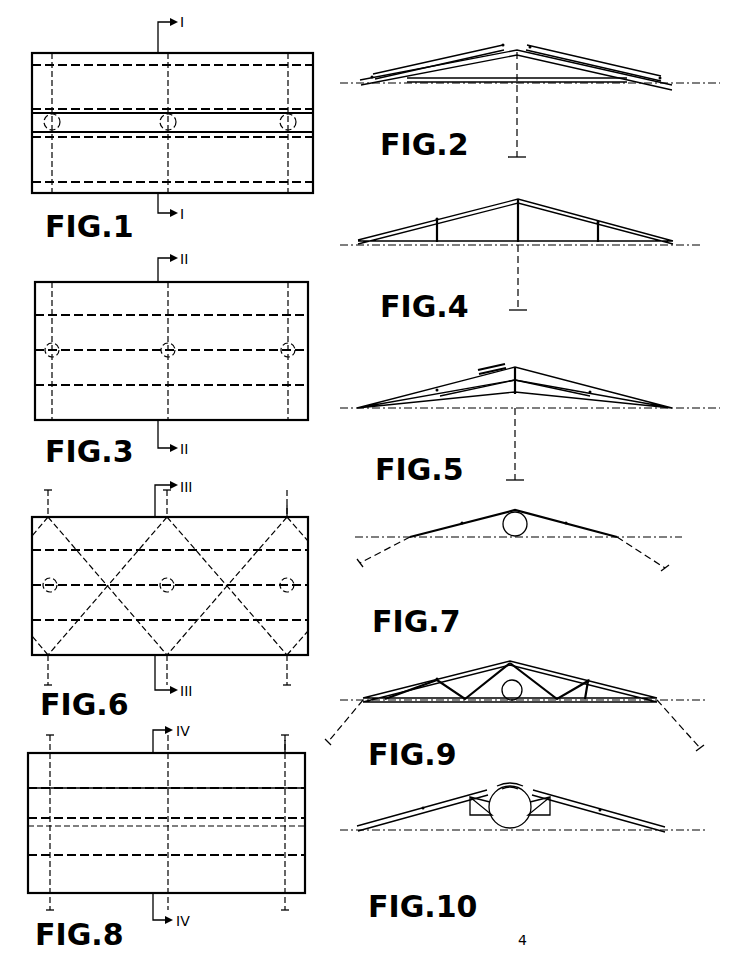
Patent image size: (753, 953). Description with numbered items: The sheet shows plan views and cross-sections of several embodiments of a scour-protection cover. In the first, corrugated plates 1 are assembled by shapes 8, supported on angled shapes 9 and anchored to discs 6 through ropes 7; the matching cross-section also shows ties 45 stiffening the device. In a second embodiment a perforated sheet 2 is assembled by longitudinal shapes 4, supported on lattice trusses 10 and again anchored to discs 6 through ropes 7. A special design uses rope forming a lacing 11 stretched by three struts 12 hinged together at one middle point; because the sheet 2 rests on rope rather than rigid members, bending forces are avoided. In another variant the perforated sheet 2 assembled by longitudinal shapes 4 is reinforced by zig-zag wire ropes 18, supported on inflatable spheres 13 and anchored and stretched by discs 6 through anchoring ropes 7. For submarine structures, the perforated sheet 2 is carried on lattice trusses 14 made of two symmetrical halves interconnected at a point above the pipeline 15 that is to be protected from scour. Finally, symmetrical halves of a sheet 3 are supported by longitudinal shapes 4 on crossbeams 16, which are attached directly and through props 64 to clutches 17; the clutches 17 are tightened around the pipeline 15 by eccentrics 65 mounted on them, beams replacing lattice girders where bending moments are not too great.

In FIG. 1, the corrugated plates 1 is at (240, 64).
In FIG. 2, the corrugated plates 1 is at (602, 63).
In FIG. 3, the perforated sheet 2 is at (209, 290).
In FIG. 6, the perforated sheet 2 is at (214, 526).
In FIG. 8, the perforated sheet 2 is at (210, 766).
In FIG. 4, the perforated sheet 2 is at (561, 218).
In FIG. 5, the perforated sheet 2 is at (547, 389).
In FIG. 7, the perforated sheet 2 is at (551, 522).
In FIG. 9, the perforated sheet 2 is at (557, 674).
In FIG. 10, the sheet 3 is at (573, 807).
In FIG. 3, the longitudinal shapes 4 is at (246, 351).
In FIG. 6, the longitudinal shapes 4 is at (233, 549).
In FIG. 8, the longitudinal shapes 4 is at (233, 788).
In FIG. 4, the longitudinal shapes 4 is at (521, 199).
In FIG. 5, the longitudinal shapes 4 is at (517, 370).
In FIG. 7, the longitudinal shapes 4 is at (515, 510).
In FIG. 9, the longitudinal shapes 4 is at (517, 659).
In FIG. 10, the longitudinal shapes 4 is at (531, 790).
In FIG. 1, the discs 6 is at (174, 123).
In FIG. 3, the discs 6 is at (171, 348).
In FIG. 6, the discs 6 is at (288, 496).
In FIG. 8, the discs 6 is at (285, 745).
In FIG. 2, the discs 6 is at (518, 156).
In FIG. 4, the discs 6 is at (518, 311).
In FIG. 5, the discs 6 is at (514, 481).
In FIG. 7, the discs 6 is at (663, 566).
In FIG. 9, the discs 6 is at (686, 748).
In FIG. 6, the ropes 7 is at (287, 512).
In FIG. 8, the ropes 7 is at (288, 754).
In FIG. 2, the ropes 7 is at (517, 129).
In FIG. 4, the ropes 7 is at (517, 279).
In FIG. 5, the ropes 7 is at (515, 449).
In FIG. 7, the ropes 7 is at (641, 562).
In FIG. 9, the ropes 7 is at (670, 724).
In FIG. 1, the shapes 8 is at (254, 112).
In FIG. 2, the shapes 8 is at (546, 50).
In FIG. 1, the angled shapes 9 is at (169, 62).
In FIG. 2, the angled shapes 9 is at (660, 90).
In FIG. 3, the lattice trusses 10 is at (288, 305).
In FIG. 4, the lattice trusses 10 is at (522, 238).
In FIG. 5, the lacing 11 is at (568, 402).
In FIG. 5, the struts 12 is at (486, 372).
In FIG. 6, the inflatable spheres 13 is at (224, 586).
In FIG. 7, the inflatable spheres 13 is at (520, 530).
In FIG. 8, the lattice trusses 14 is at (166, 788).
In FIG. 9, the lattice trusses 14 is at (564, 706).
In FIG. 8, the pipeline 15 is at (170, 818).
In FIG. 9, the pipeline 15 is at (516, 702).
In FIG. 10, the pipeline 15 is at (512, 830).
In FIG. 10, the crossbeams 16 is at (559, 812).
In FIG. 10, the clutches 17 is at (498, 788).
In FIG. 6, the zig-zag wire ropes 18 is at (230, 584).
In FIG. 2, the ties 45 is at (549, 85).
In FIG. 10, the props 64 is at (480, 812).
In FIG. 10, the eccentrics 65 is at (520, 786).